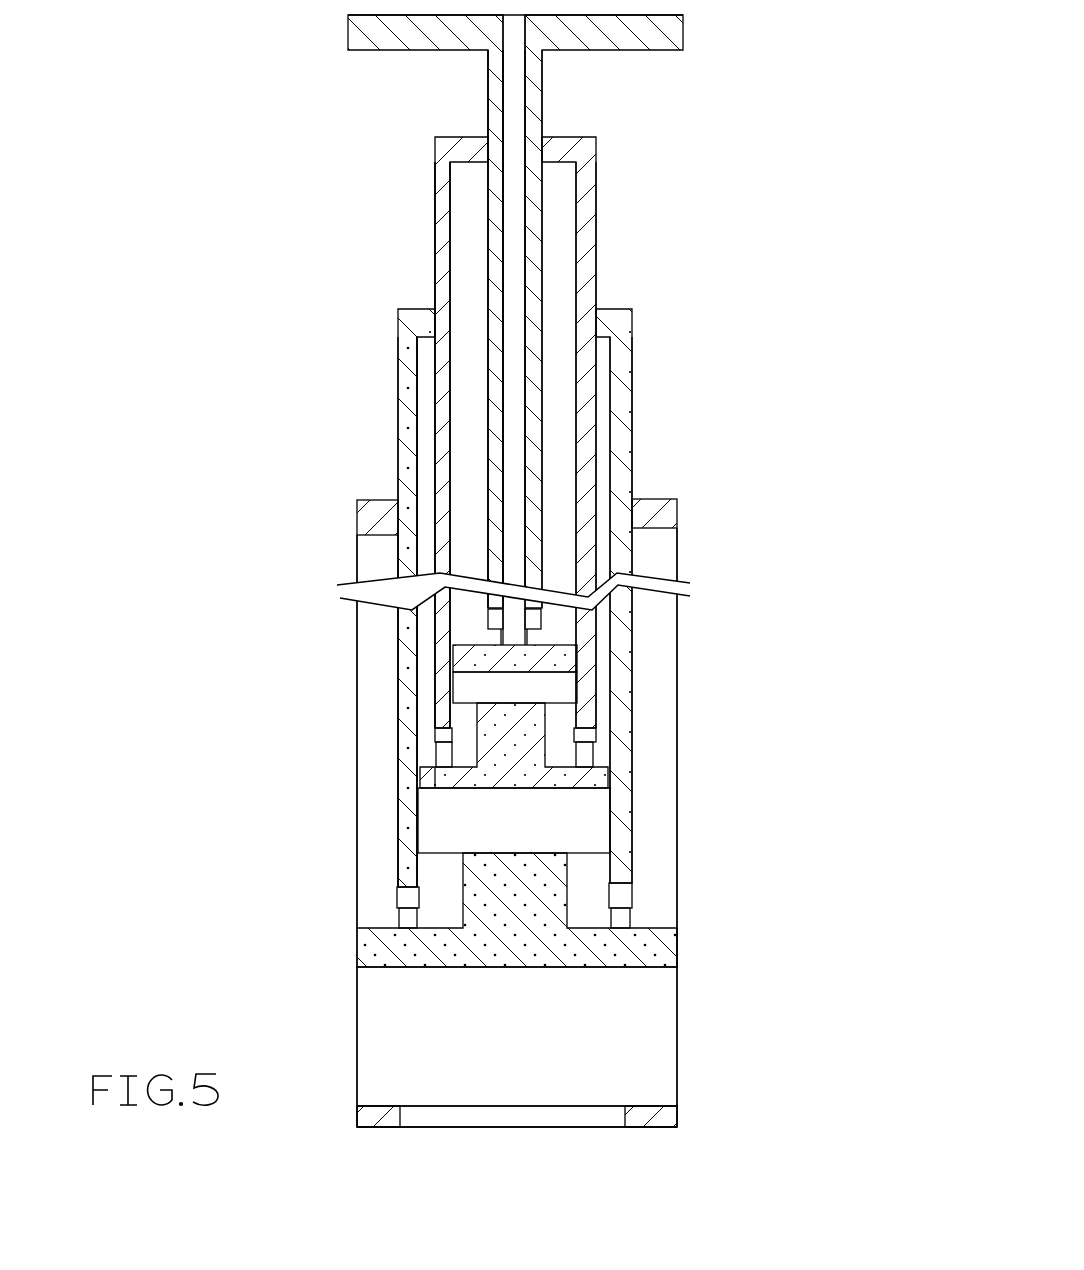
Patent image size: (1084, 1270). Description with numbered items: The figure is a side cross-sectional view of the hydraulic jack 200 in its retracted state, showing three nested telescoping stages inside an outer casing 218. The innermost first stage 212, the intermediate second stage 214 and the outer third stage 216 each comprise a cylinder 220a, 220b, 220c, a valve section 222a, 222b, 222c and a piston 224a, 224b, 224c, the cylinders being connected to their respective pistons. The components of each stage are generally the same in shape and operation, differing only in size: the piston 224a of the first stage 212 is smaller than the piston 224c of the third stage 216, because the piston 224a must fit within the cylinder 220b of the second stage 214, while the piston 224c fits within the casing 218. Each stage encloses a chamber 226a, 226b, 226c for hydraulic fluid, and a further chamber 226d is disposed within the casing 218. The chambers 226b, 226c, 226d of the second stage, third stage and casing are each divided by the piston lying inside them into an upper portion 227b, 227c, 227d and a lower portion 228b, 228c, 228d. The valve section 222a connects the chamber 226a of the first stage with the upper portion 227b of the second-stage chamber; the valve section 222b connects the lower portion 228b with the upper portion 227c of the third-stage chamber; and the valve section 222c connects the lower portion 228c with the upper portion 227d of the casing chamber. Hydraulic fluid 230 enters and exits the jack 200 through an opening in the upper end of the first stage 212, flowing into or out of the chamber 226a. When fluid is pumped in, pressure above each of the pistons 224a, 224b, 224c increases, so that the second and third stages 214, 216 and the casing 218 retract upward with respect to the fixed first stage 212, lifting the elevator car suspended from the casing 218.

The hydraulic jack 200 is at (822, 30).
The first stage 212 is at (572, 91).
The second stage 214 is at (624, 188).
The third stage 216 is at (656, 376).
The casing 218 is at (678, 742).
The cylinder 220a is at (498, 96).
The cylinder 220b is at (440, 270).
The cylinder 220c is at (400, 430).
The valve section 222a is at (541, 625).
The valve section 222b is at (592, 735).
The valve section 222c is at (405, 896).
The piston 224a is at (548, 660).
The piston 224b is at (434, 812).
The piston 224c is at (573, 948).
The chamber 226a is at (514, 355).
The chamber 226b is at (466, 216).
The chamber 226c is at (424, 477).
The chamber 226d is at (372, 757).
The upper portion 227b is at (560, 283).
The upper portion 227c is at (603, 477).
The upper portion 227d is at (664, 810).
The lower portion 228b is at (470, 685).
The lower portion 228c is at (587, 828).
The lower portion 228d is at (648, 1048).
The hydraulic fluid 230 is at (515, 63).